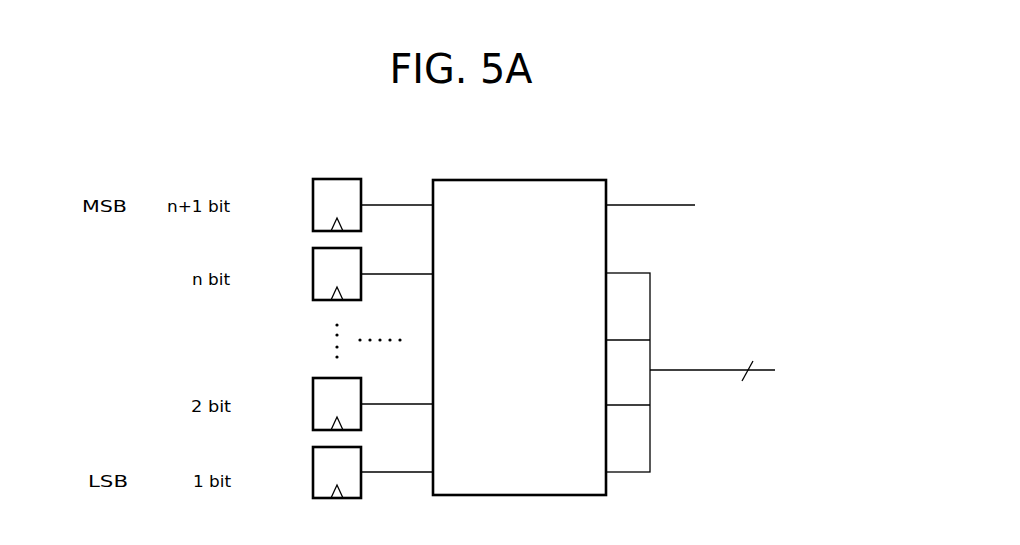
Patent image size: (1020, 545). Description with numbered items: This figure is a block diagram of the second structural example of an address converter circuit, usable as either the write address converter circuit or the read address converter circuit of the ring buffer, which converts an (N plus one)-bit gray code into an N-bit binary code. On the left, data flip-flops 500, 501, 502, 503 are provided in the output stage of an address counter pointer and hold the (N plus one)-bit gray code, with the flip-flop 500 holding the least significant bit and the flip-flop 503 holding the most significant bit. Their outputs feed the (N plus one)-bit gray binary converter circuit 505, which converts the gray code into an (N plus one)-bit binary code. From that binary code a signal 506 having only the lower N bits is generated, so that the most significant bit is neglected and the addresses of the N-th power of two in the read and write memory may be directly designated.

The data flip-flop 500 is at (318, 467).
The data flip-flop 501 is at (318, 394).
The data flip-flop 502 is at (318, 273).
The data flip-flop 503 is at (318, 194).
The (N+1)-bit gray binary converter circuit 505 is at (522, 186).
The signal 506 is at (690, 370).